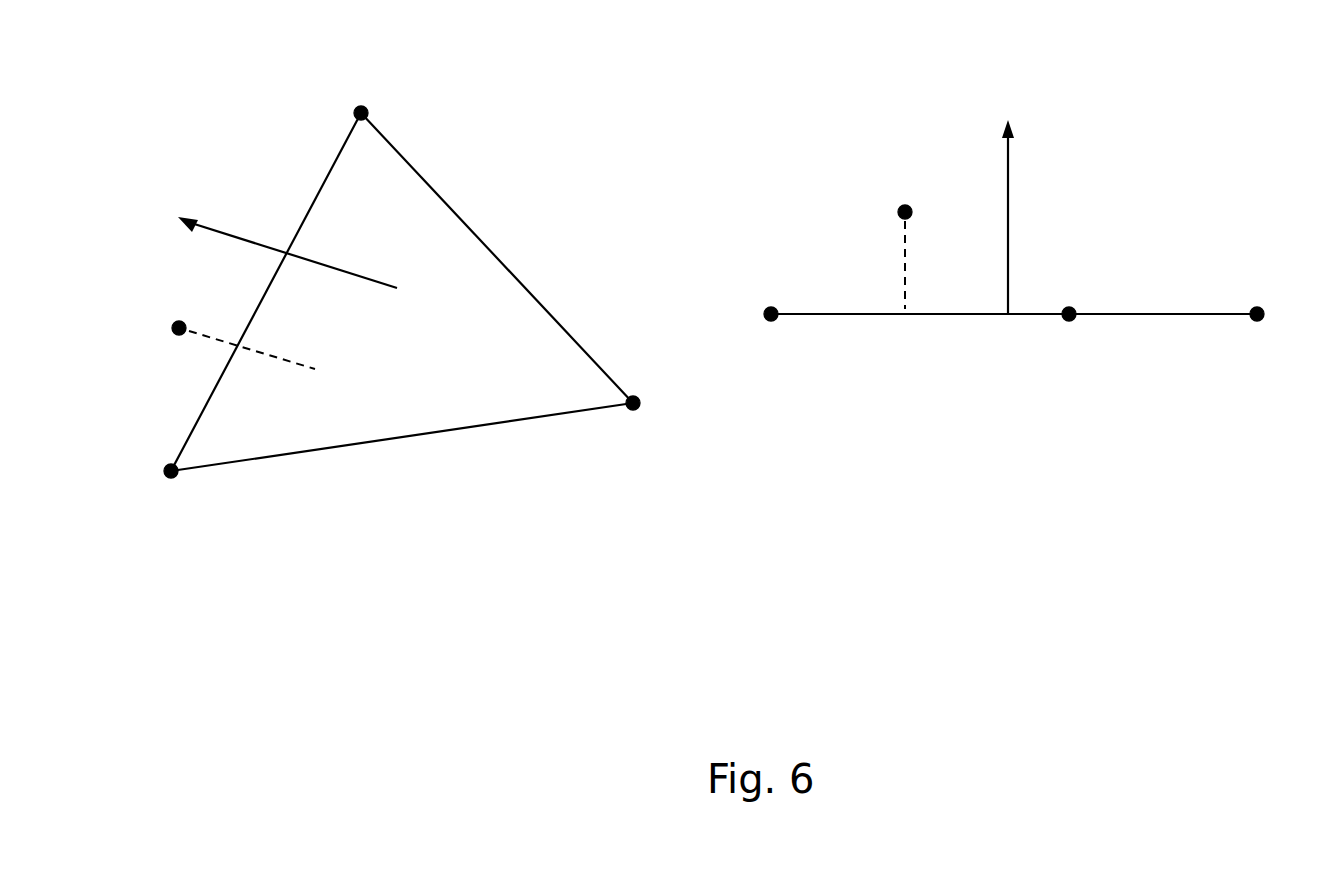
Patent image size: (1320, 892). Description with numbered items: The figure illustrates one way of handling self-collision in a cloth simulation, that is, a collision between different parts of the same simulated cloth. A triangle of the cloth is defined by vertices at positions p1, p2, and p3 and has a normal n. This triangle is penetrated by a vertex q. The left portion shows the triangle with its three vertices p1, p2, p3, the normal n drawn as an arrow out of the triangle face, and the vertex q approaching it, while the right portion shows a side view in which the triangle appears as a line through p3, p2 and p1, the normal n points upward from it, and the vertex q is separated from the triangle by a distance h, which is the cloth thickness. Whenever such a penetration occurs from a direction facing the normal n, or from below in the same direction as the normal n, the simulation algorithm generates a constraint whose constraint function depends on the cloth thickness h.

The first vertex position p1 is at (965, 377).
The second vertex position p2 is at (715, 213).
The third vertex position p3 is at (456, 413).
The penetrating vertex q is at (524, 268).
The triangle normal n is at (582, 205).
The cloth thickness h is at (885, 270).